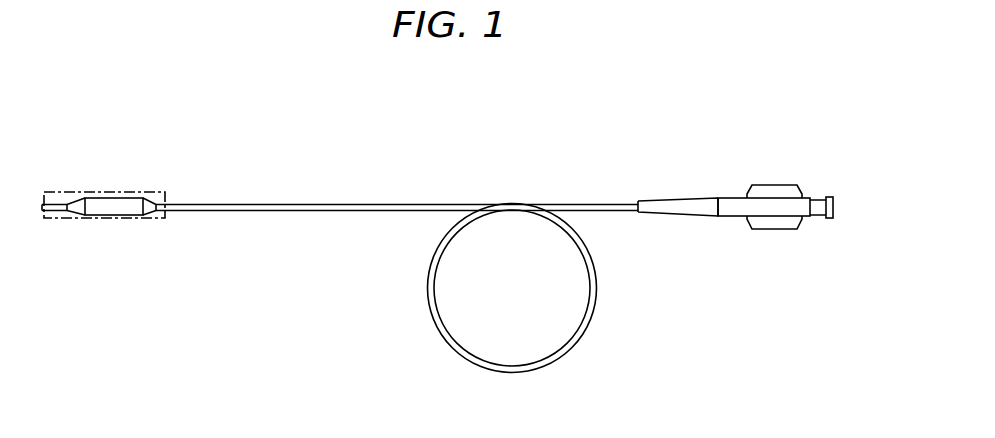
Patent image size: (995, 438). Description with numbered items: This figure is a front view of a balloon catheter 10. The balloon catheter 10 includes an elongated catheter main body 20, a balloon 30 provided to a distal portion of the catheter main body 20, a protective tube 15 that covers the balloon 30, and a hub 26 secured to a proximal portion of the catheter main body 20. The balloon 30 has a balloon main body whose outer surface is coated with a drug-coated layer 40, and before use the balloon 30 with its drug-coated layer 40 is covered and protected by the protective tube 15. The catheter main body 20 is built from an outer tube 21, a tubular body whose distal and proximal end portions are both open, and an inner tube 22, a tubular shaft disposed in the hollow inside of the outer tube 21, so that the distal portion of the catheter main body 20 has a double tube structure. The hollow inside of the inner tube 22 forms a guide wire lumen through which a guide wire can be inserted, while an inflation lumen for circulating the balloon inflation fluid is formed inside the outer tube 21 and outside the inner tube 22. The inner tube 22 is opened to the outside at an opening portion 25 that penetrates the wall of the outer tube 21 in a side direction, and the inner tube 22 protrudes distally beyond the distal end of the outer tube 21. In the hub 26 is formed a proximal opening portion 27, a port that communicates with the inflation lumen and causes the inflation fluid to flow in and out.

The balloon catheter 10 is at (144, 158).
The protective tube 15 is at (146, 219).
The catheter main body 20 is at (315, 203).
The outer tube 21 is at (174, 212).
The inner tube 22 is at (56, 213).
The opening portion 25 is at (380, 203).
The hub 26 is at (737, 204).
The proximal opening portion 27 is at (834, 219).
The balloon 30 is at (80, 197).
The drug-coated layer 40 is at (118, 216).